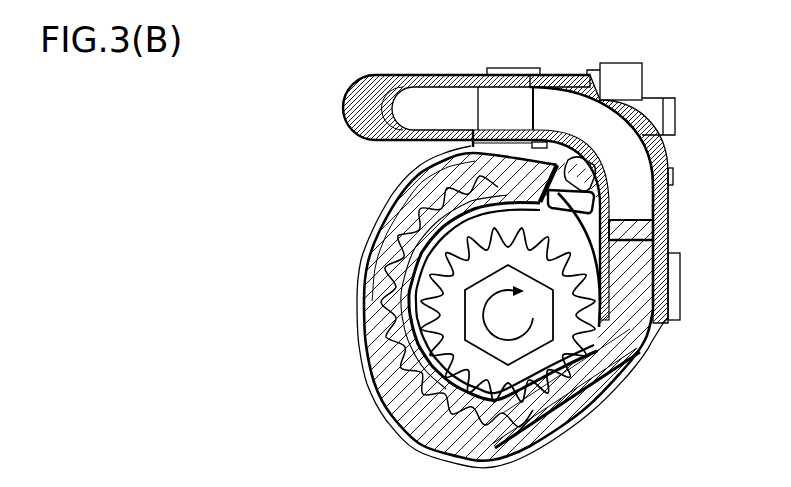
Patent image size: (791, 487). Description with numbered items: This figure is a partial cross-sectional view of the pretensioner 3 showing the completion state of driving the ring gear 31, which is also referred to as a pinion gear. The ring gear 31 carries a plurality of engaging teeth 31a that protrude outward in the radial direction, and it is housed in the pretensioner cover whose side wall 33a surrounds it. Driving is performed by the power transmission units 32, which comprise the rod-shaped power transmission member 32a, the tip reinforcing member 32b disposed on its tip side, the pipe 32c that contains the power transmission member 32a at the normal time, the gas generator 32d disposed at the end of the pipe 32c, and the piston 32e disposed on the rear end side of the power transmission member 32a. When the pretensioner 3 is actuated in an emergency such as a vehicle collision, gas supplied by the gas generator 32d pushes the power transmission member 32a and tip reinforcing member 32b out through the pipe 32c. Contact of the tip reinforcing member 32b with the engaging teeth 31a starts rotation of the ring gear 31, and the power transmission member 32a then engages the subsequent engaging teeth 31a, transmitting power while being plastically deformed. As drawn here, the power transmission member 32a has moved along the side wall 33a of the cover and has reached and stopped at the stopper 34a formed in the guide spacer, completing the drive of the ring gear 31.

The pretensioner 3 is at (332, 74).
The ring gear 31 is at (455, 294).
The engaging teeth 31a is at (572, 343).
The power transmission units 32 is at (693, 107).
The power transmission member 32a is at (380, 351).
The tip reinforcing member 32b is at (527, 168).
The pipe 32c is at (403, 75).
The gas generator 32d is at (616, 63).
The piston 32e is at (628, 220).
The side wall 33a is at (374, 228).
The stopper 34a is at (580, 200).